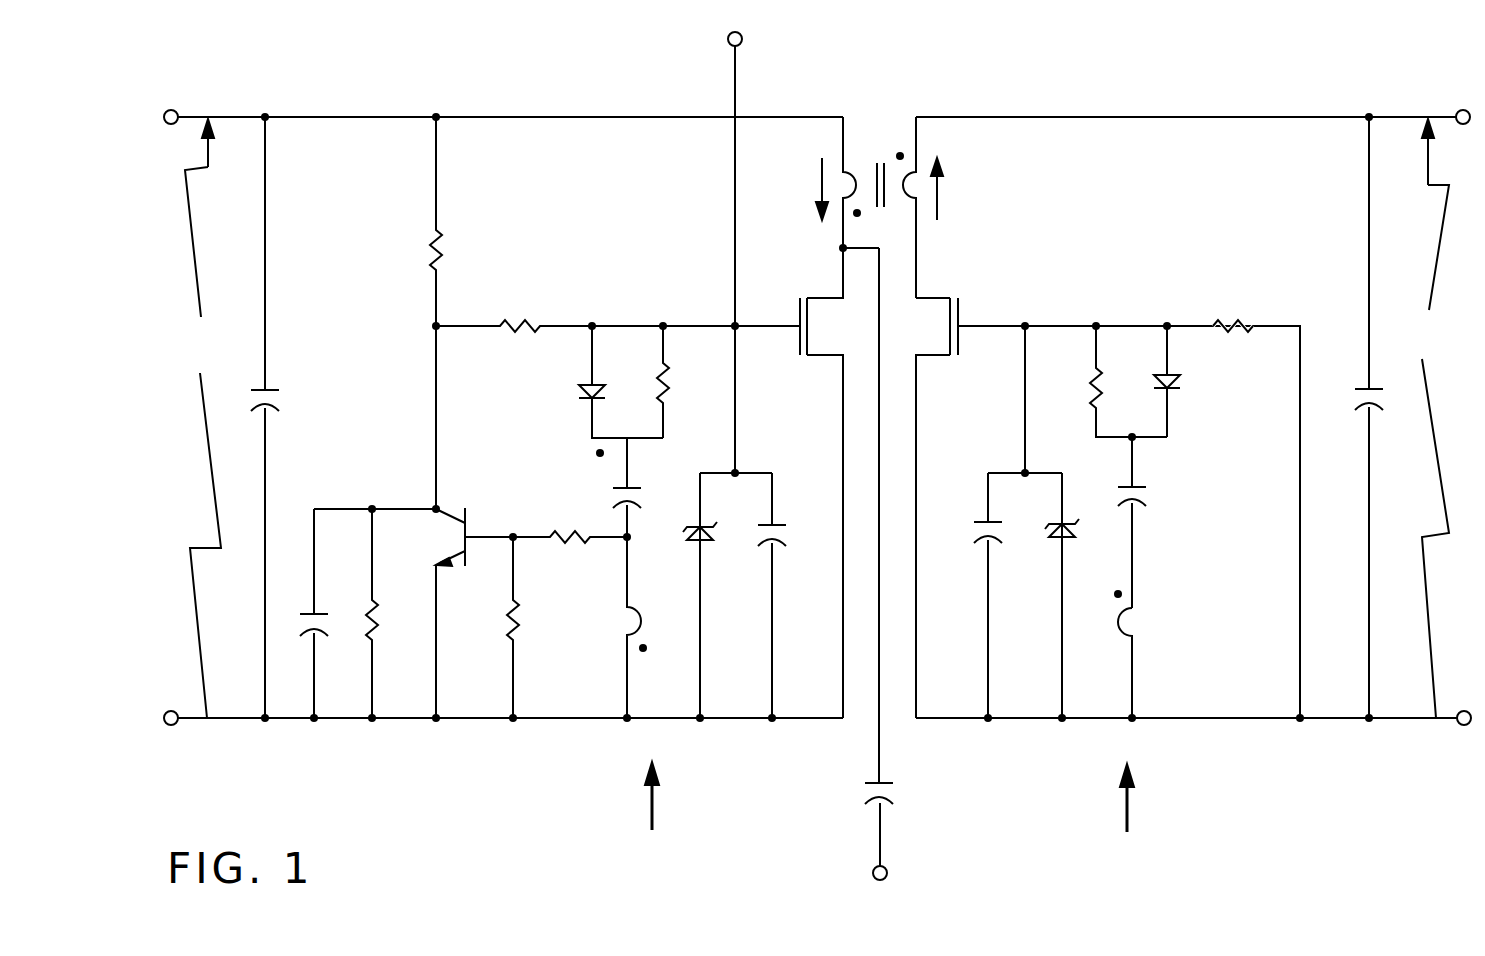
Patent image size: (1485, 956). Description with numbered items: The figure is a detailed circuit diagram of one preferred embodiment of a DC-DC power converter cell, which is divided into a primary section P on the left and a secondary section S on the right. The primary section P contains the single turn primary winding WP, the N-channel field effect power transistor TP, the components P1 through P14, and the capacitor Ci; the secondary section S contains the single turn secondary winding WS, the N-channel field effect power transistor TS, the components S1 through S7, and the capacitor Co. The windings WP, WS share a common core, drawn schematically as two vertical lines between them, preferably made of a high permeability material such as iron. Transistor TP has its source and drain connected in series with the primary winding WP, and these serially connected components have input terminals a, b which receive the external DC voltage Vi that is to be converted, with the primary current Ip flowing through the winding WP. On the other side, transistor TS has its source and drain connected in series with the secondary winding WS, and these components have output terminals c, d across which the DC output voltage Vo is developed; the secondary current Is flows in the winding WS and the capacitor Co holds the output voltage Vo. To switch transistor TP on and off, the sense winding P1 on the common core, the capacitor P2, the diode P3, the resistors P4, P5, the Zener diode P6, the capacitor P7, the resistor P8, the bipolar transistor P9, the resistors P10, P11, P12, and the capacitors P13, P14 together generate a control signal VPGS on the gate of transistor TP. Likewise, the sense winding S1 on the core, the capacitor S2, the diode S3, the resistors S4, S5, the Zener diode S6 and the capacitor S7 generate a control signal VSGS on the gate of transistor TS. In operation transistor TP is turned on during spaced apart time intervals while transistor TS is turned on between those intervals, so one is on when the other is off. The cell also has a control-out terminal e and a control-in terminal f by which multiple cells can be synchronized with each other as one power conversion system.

The input terminal a is at (240, 117).
The input terminal b is at (239, 718).
The output terminal c is at (1396, 117).
The output terminal d is at (1418, 718).
The control-out terminal e is at (880, 838).
The control-in terminal f is at (735, 80).
The external DC voltage Vi is at (203, 418).
The DC output voltage Vo is at (1430, 418).
The capacitor Ci is at (277, 394).
The capacitor Co is at (1362, 402).
The primary winding WP is at (858, 145).
The secondary winding WS is at (901, 128).
The primary current Ip is at (817, 178).
The secondary current Is is at (942, 198).
The N-Channel field effect power transistor TP is at (800, 380).
The N-Channel field effect power transistor TS is at (958, 380).
The control signal VPGS is at (722, 326).
The control signal VSGS is at (1008, 326).
The sense winding P1 is at (641, 630).
The capacitor P2 is at (616, 504).
The diode P3 is at (580, 392).
The resistor P4 is at (668, 384).
The resistor P5 is at (531, 326).
The Zener diode P6 is at (684, 540).
The capacitor P7 is at (763, 542).
The resistor P8 is at (433, 243).
The bipolar transistor P9 is at (457, 482).
The resistor P10 is at (580, 541).
The resistor P11 is at (509, 620).
The resistor P12 is at (376, 620).
The capacitor P13 is at (322, 636).
The capacitor P14 is at (893, 787).
The sense winding S1 is at (1132, 626).
The capacitor S2 is at (1140, 492).
The diode S3 is at (1178, 388).
The resistor S4 is at (1090, 385).
The resistor S5 is at (1232, 326).
The Zener diode S6 is at (1050, 532).
The capacitor S7 is at (982, 541).
The primary section P is at (652, 820).
The secondary section S is at (1127, 818).